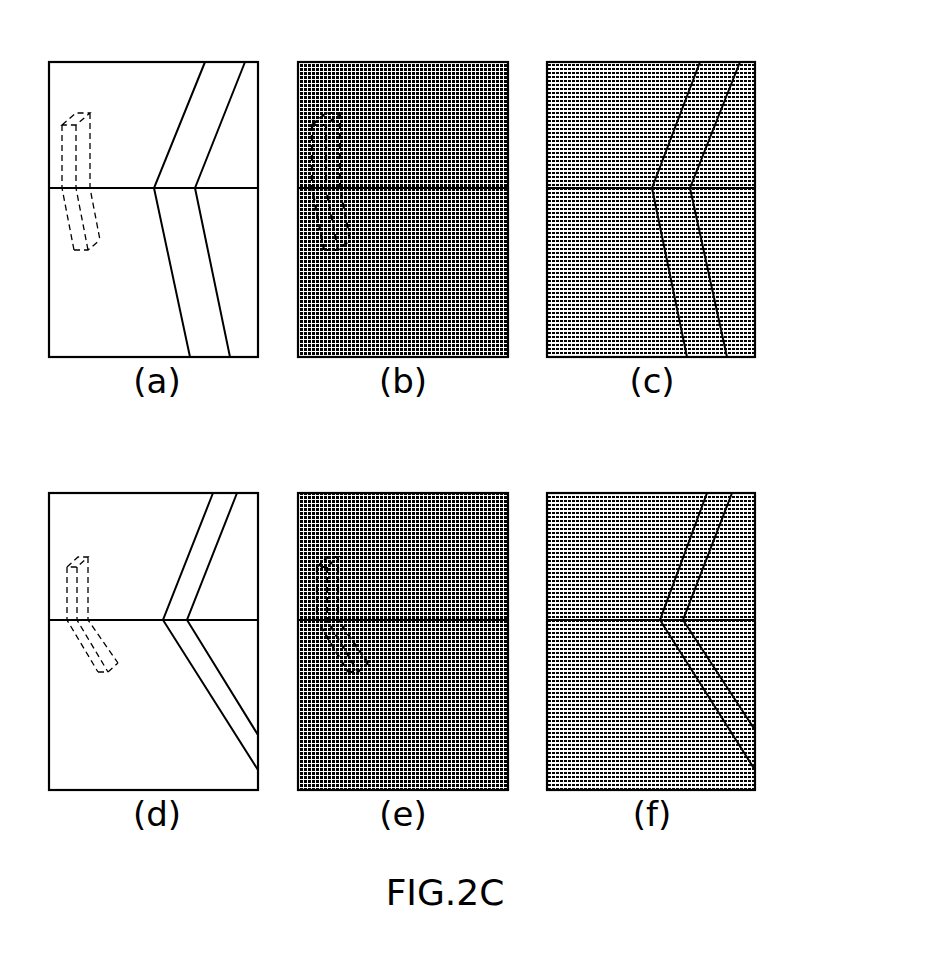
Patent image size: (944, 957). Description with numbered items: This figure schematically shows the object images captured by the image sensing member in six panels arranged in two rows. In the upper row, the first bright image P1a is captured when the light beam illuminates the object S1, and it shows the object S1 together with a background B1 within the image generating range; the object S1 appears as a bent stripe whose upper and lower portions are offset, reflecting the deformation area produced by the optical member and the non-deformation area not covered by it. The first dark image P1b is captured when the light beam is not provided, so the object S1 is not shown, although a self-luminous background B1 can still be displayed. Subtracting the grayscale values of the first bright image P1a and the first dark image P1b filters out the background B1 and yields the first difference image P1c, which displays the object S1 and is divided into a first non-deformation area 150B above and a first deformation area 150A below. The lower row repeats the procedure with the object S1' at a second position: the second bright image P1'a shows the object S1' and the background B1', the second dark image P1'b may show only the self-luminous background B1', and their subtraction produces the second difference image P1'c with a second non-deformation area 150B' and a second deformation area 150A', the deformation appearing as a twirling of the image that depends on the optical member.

The background B1 is at (204, 137).
The first bright image P1a is at (155, 62).
The object S1 is at (447, 191).
The first dark image P1b is at (403, 62).
The first difference image P1c is at (699, 191).
The first non-deformation area 150B is at (699, 125).
The first deformation area 150A is at (699, 272).
The background B1' is at (212, 565).
The second bright image P1'a is at (153, 624).
The object S1' is at (459, 614).
The second dark image P1'b is at (403, 624).
The second difference image P1'c is at (701, 624).
The second non-deformation area 150B' is at (701, 556).
The second deformation area 150A' is at (701, 705).